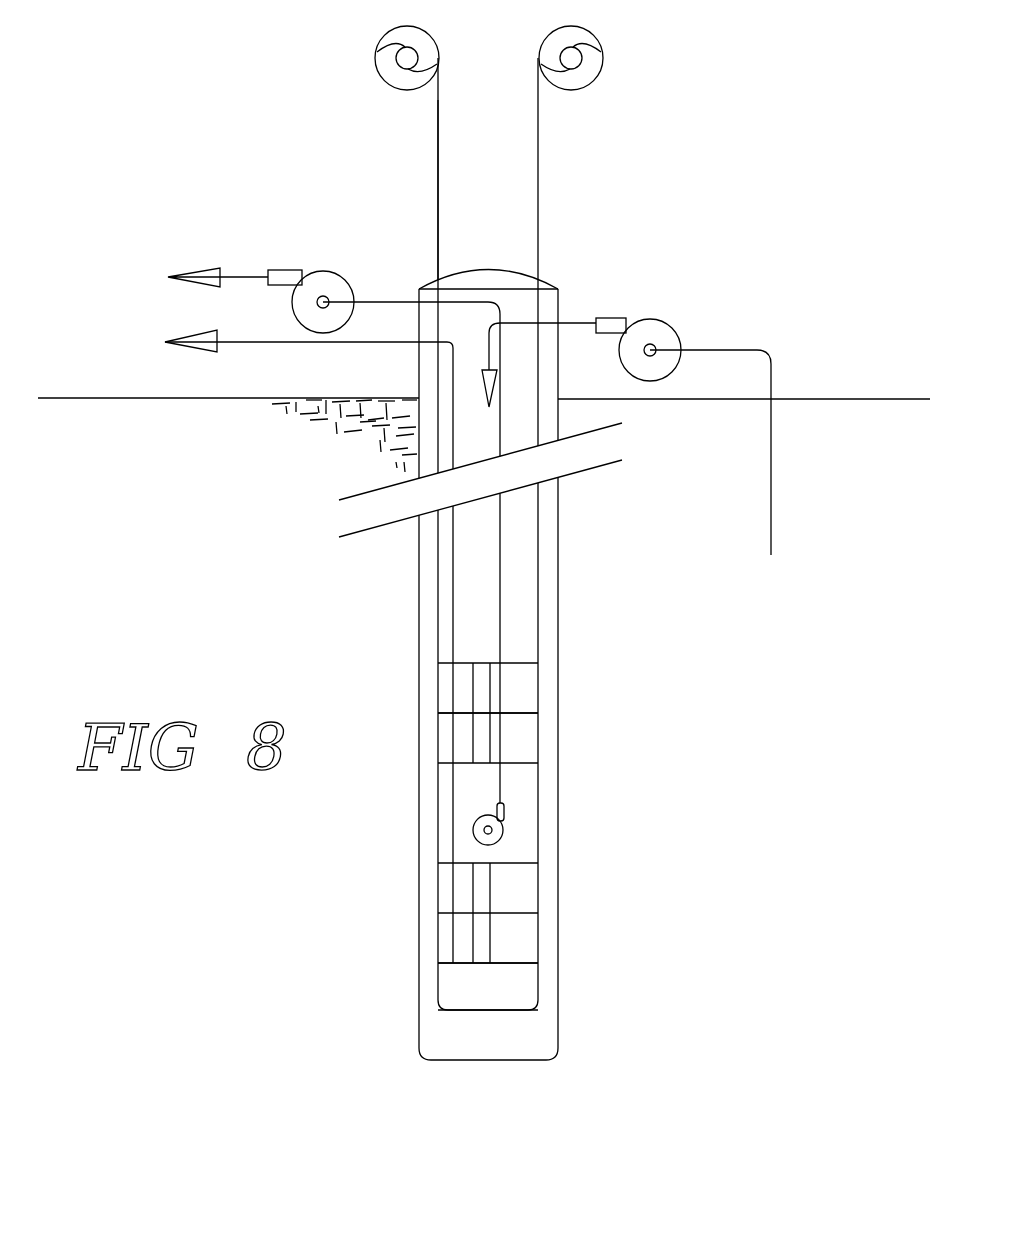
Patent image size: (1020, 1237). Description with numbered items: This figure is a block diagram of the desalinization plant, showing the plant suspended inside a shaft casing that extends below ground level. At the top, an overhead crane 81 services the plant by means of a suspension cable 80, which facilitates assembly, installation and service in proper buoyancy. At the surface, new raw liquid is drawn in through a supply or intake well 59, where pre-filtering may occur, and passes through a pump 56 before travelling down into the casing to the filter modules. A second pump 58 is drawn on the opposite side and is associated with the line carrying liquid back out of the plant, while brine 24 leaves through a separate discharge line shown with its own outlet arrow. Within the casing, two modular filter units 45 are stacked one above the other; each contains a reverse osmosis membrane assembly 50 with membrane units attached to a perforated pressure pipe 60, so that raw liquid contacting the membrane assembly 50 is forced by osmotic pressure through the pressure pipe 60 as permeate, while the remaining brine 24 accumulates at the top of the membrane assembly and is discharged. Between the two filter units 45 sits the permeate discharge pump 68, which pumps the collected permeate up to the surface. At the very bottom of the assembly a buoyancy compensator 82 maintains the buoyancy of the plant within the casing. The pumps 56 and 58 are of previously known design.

The overhead crane 81 is at (600, 50).
The suspension cable 80 is at (438, 230).
The pump 58 is at (267, 273).
The brine 24 is at (165, 342).
The pump 56 is at (682, 341).
The supply or intake well 59 is at (771, 525).
The reverse osmosis membrane assembly 50 is at (472, 683).
The perforated pressure pipe 60 is at (490, 688).
The modular filter unit 45 is at (515, 733).
The permeate discharge pump 68 is at (507, 812).
The buoyancy compensator 82 is at (500, 982).